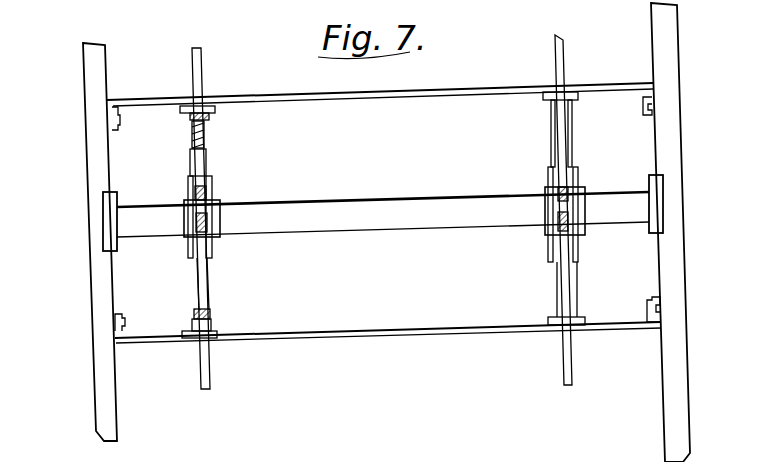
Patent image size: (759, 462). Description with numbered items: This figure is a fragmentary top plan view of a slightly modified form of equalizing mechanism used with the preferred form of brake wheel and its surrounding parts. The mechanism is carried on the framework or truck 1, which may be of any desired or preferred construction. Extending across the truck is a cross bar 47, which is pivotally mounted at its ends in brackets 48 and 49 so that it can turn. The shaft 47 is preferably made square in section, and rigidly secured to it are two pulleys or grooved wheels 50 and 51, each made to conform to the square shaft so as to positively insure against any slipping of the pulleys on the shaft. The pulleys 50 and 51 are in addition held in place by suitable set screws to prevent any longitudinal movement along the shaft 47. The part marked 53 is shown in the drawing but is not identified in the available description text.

The framework or truck 1 is at (115, 396).
The cross bar 47 is at (376, 201).
The bracket 48 is at (662, 184).
The bracket 49 is at (103, 207).
The pulley or grooved wheel 50 is at (552, 243).
The pulley or grooved wheel 51 is at (188, 190).
The lower bracket 53 is at (197, 297).